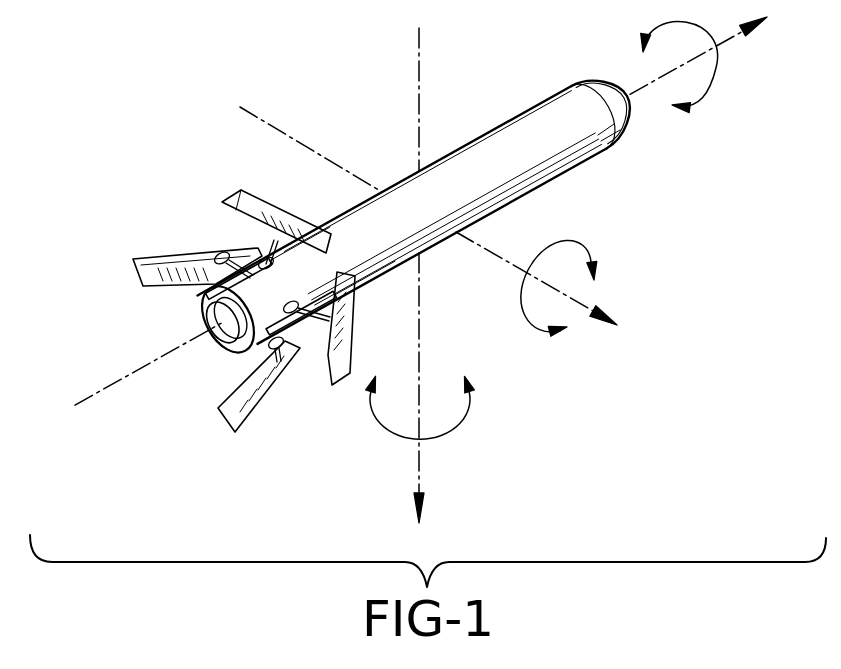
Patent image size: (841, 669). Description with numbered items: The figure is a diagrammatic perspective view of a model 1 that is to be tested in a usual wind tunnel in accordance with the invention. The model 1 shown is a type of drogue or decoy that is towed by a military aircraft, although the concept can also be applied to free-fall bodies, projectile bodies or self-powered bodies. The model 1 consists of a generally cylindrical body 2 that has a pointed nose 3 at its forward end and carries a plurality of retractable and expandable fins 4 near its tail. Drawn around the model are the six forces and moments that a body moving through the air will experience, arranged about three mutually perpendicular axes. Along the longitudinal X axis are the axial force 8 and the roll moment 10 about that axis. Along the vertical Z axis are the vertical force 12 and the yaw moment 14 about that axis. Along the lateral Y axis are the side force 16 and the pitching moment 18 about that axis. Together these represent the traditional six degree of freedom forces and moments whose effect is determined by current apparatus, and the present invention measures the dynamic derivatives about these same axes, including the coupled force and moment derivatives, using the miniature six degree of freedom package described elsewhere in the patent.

The model 1 is at (585, 182).
The cylindrical body 2 is at (352, 220).
The pointed nose 3 is at (631, 107).
The fins 4 is at (173, 250).
The axial force 8 is at (726, 38).
The roll moment 10 is at (713, 106).
The vertical force 12 is at (418, 474).
The yaw moment 14 is at (376, 415).
The side force 16 is at (483, 248).
The pitching moment 18 is at (580, 243).